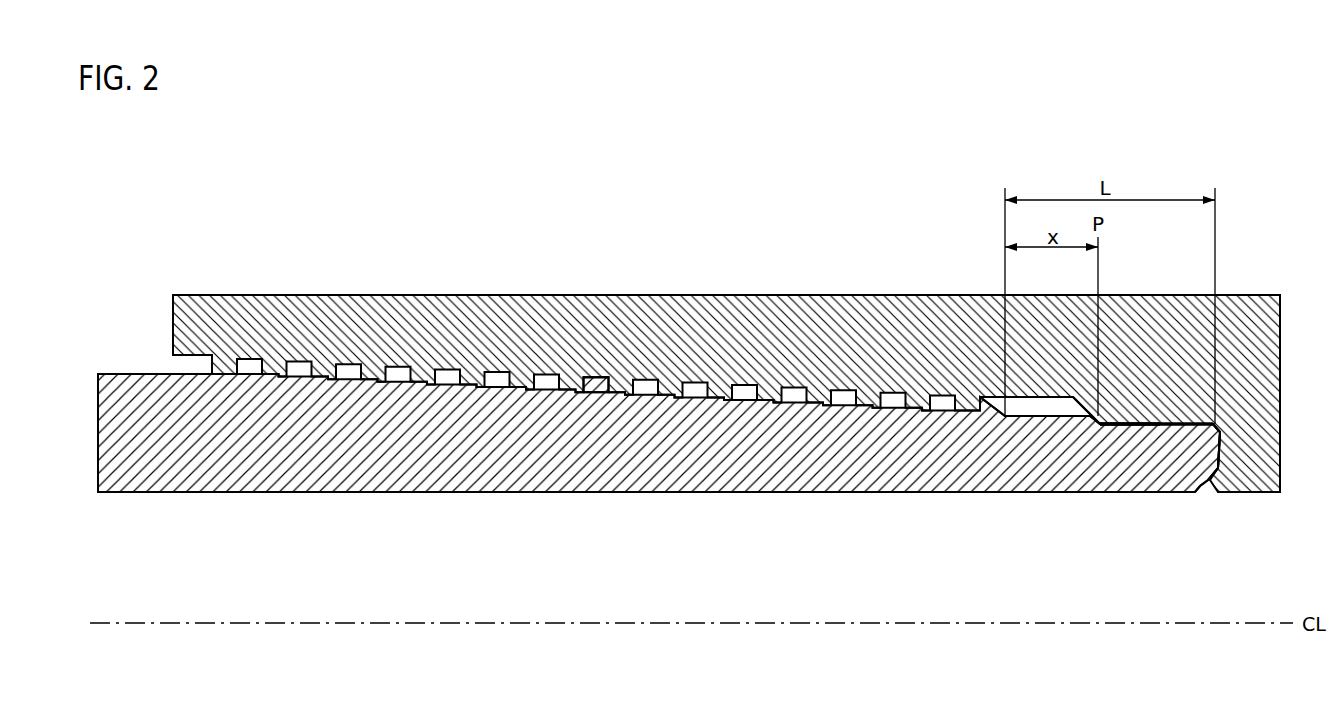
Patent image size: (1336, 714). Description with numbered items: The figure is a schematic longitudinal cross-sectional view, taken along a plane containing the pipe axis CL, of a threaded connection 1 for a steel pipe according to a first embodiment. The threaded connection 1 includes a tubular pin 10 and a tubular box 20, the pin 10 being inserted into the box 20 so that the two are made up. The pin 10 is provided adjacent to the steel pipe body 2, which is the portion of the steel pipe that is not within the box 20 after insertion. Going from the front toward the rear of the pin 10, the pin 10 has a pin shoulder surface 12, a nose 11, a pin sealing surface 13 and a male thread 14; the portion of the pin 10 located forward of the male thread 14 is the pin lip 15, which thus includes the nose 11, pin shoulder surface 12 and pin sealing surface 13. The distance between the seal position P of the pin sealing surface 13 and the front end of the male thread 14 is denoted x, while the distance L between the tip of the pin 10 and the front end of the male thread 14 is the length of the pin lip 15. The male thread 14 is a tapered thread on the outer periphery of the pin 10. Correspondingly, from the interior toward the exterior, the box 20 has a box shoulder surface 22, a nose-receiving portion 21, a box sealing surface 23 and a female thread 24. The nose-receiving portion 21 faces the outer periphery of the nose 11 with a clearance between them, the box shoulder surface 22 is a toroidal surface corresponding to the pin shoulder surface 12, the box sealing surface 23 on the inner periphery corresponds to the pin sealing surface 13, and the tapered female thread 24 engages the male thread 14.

The threaded connection 1 is at (1086, 111).
The steel pipe body 2 is at (103, 372).
The pin 10 is at (735, 508).
The nose 11 is at (1152, 452).
The pin shoulder surface 12 is at (1210, 481).
The pin sealing surface 13 is at (1100, 426).
The male thread 14 is at (593, 394).
The pin lip 15 is at (1038, 506).
The box 20 is at (719, 285).
The nose-receiving portion 21 is at (1149, 398).
The box shoulder surface 22 is at (1210, 422).
The box sealing surface 23 is at (1101, 422).
The female thread 24 is at (595, 372).